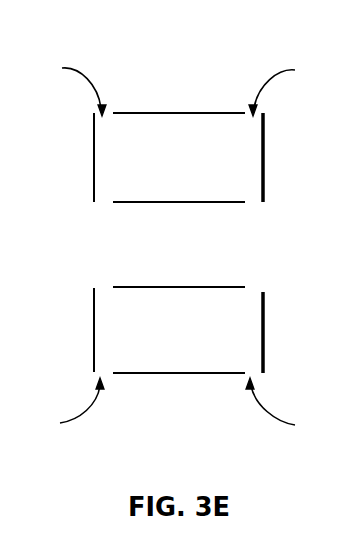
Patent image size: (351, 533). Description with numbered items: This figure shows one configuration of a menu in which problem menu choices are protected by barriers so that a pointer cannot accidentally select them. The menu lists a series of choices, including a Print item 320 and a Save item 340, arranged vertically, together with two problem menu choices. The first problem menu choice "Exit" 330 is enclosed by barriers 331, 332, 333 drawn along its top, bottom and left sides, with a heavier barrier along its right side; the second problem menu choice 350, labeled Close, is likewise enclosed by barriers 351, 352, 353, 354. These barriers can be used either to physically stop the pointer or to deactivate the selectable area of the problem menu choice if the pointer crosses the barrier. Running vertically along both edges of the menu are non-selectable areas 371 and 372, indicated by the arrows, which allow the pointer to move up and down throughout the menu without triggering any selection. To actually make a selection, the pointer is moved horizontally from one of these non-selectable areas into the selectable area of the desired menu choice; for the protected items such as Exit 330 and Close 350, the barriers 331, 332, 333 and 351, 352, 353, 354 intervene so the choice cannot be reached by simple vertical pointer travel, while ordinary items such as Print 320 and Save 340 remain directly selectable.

The PRINT menu item 320 is at (197, 55).
The problem menu choice "Exit" 330 is at (230, 155).
The barrier 331 is at (222, 112).
The barrier 332 is at (230, 202).
The barrier 333 is at (94, 150).
The SAVE menu item 340 is at (230, 237).
The problem menu choice 350 is at (228, 322).
The barrier 351 is at (233, 286).
The barrier 352 is at (185, 375).
The barrier 353 is at (94, 325).
The barrier 354 is at (263, 363).
The non-selectable area 371 is at (66, 246).
The non-selectable area 372 is at (288, 249).